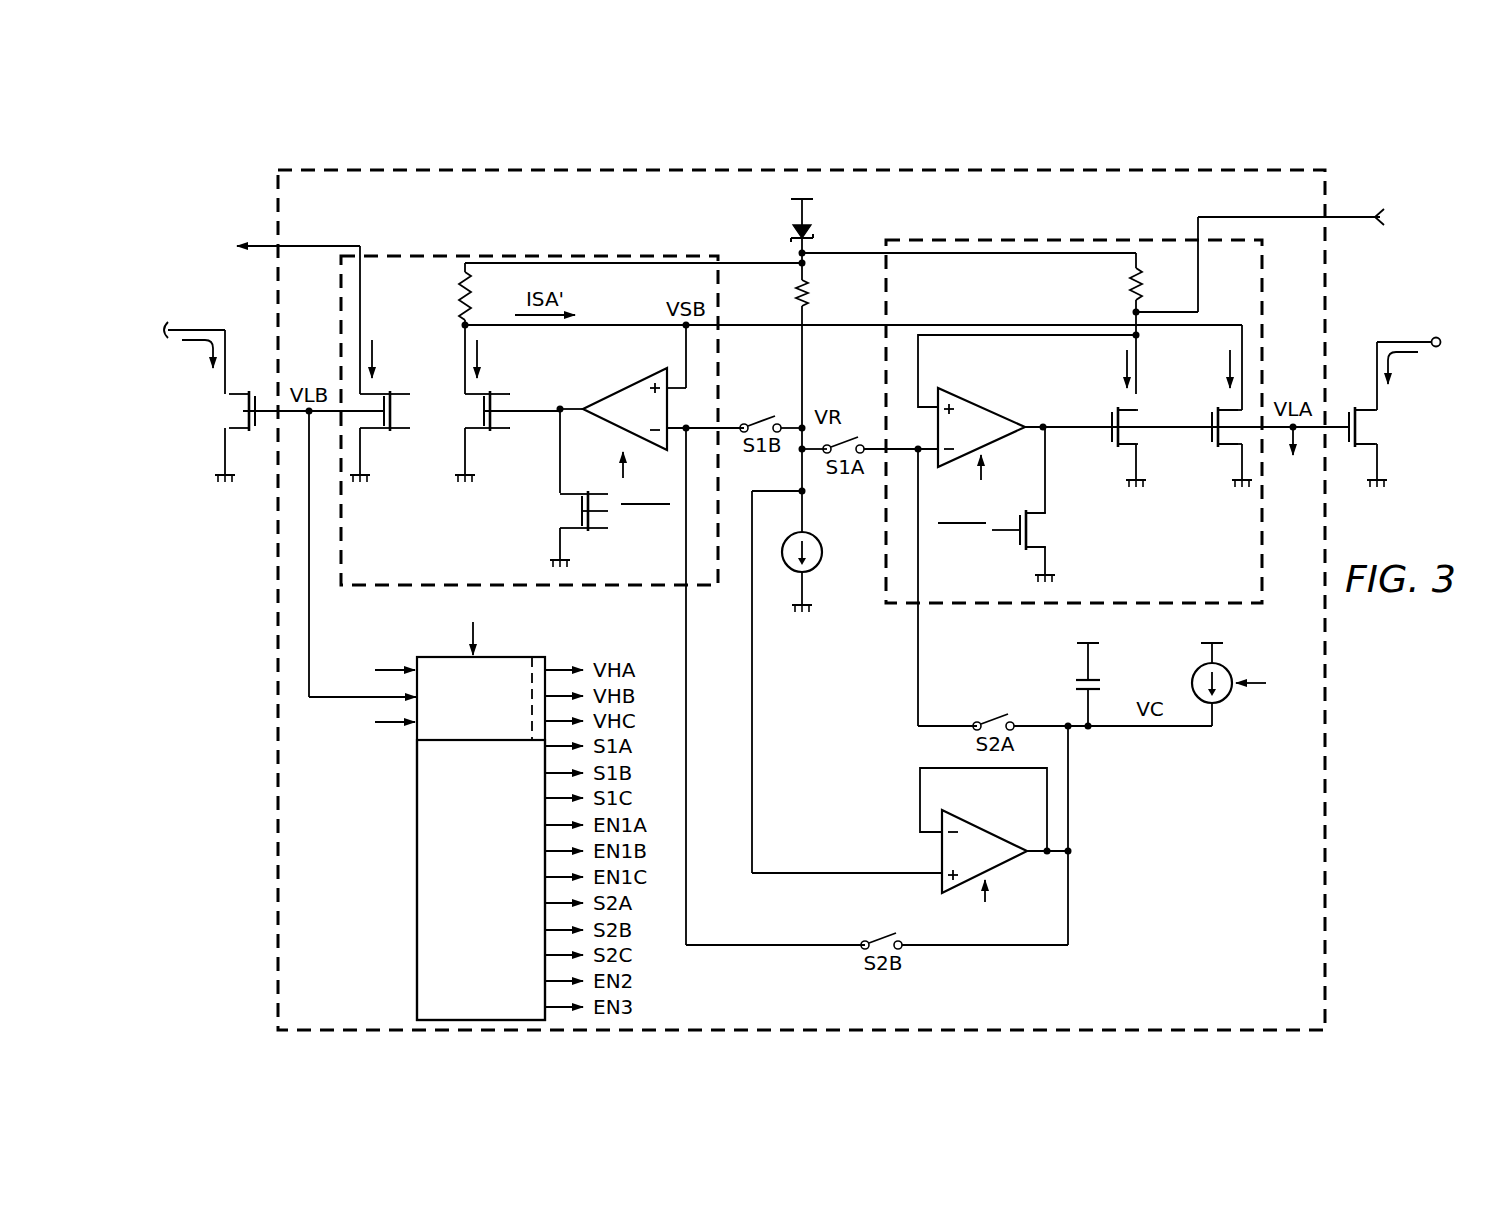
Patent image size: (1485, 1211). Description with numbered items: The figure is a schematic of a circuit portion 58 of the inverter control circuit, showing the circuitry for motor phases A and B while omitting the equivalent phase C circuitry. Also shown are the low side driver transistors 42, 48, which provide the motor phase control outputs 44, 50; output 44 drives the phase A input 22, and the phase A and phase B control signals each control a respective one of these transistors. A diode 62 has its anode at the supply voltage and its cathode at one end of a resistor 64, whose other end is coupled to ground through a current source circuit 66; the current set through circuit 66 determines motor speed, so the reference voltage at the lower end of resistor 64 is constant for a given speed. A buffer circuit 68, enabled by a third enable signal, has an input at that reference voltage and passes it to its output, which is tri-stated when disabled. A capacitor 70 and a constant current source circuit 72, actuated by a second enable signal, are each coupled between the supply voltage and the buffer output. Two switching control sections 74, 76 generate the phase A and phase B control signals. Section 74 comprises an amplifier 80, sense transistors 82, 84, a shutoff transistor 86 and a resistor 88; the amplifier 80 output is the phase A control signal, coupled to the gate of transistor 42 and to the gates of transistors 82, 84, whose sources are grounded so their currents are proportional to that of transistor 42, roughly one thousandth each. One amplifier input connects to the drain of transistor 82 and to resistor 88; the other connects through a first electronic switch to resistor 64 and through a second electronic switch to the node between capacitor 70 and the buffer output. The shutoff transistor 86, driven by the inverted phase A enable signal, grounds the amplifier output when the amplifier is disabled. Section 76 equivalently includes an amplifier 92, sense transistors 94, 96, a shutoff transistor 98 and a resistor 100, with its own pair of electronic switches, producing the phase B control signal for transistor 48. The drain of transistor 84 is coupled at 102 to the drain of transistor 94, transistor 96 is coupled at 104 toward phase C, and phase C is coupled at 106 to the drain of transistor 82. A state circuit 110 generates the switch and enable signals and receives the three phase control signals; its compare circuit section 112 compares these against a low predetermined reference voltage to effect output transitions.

The phase A input 22 is at (1437, 336).
The low side driver transistor 42 is at (1352, 410).
The motor phase control output 44 is at (1394, 340).
The low side driver transistor 48 is at (256, 402).
The motor phase control output 50 is at (210, 330).
The circuit portion 58 is at (1328, 788).
The diode 62 is at (793, 232).
The resistor 64 is at (794, 292).
The current source circuit 66 is at (815, 536).
The buffer circuit 68 is at (988, 827).
The capacitor 70 is at (1078, 685).
The constant current source circuit 72 is at (1228, 667).
The switching control section 74 is at (1105, 240).
The switching control section 76 is at (444, 256).
The amplifier 80 is at (1010, 402).
The sense transistor 82 is at (1108, 418).
The further sense transistor 84 is at (1208, 418).
The shutoff transistor 86 is at (1018, 538).
The resistor 88 is at (1128, 284).
The amplifier 92 is at (621, 388).
The sense transistor 94 is at (495, 403).
The further sense transistor 96 is at (394, 403).
The shutoff transistor 98 is at (592, 527).
The resistor 100 is at (458, 293).
The drain coupling node 102 is at (950, 325).
The drain coupling node 104 is at (330, 245).
The drain coupling node 106 is at (1275, 218).
The state circuit 110 is at (481, 880).
The compare circuit section 112 is at (424, 809).